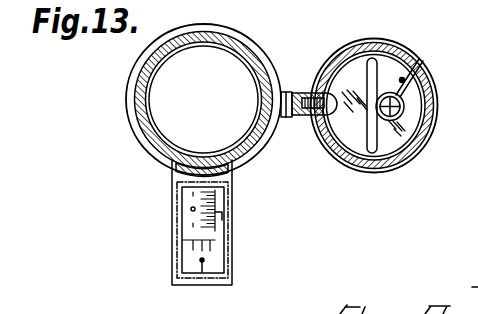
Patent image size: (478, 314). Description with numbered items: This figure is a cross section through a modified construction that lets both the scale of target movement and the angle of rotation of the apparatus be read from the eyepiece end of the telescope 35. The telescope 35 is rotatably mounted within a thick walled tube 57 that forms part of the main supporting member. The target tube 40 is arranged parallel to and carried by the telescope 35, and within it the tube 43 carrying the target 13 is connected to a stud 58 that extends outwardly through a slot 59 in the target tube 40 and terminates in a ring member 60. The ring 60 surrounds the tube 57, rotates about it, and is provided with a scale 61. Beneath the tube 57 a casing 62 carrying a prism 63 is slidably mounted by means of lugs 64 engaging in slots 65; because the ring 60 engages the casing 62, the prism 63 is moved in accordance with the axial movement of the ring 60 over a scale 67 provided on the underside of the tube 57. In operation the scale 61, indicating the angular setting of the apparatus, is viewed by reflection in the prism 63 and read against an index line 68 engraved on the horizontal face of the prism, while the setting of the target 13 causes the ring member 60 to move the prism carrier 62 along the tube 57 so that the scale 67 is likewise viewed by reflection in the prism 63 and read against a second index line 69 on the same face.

The target 13 is at (368, 120).
The telescope 35 is at (165, 57).
The target tube 40 is at (402, 79).
The tube 43 is at (438, 108).
The thick walled tube 57 is at (127, 124).
The stud 58 is at (283, 91).
The slot 59 is at (312, 119).
The ring member 60 is at (257, 63).
The scale 61 is at (188, 245).
The casing 62 is at (233, 258).
The prism 63 is at (183, 270).
The lugs 64 is at (231, 162).
The slots 65 is at (171, 163).
The scale 67 is at (191, 203).
The index line 68 is at (212, 266).
The second index line 69 is at (222, 220).